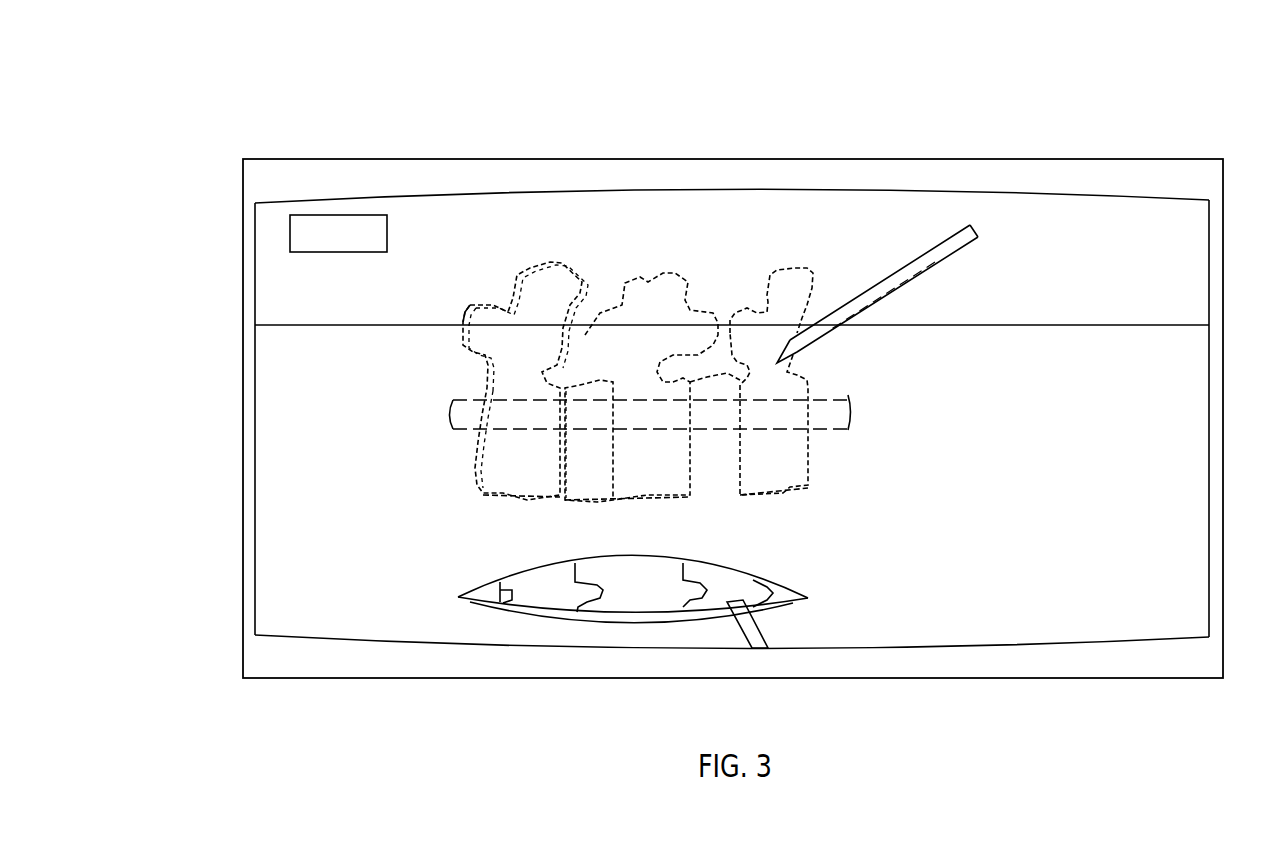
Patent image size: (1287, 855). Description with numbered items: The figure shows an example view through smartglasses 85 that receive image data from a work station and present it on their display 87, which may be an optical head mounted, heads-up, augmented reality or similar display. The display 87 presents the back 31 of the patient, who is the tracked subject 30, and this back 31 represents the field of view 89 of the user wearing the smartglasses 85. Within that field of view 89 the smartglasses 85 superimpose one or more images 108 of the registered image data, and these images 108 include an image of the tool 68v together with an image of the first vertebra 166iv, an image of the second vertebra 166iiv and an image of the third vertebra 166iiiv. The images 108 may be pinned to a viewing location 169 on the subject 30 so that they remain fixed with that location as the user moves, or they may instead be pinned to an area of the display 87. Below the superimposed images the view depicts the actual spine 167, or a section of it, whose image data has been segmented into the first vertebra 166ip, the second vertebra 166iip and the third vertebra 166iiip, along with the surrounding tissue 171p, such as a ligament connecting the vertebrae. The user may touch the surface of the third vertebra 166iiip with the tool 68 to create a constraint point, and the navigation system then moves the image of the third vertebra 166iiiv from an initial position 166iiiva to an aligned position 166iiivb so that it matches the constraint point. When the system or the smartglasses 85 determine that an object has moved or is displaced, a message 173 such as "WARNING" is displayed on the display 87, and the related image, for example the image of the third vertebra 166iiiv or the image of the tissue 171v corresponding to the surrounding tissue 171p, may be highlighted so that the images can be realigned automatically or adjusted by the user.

The smartglasses 85 is at (298, 110).
The display 87 is at (1112, 193).
The field of view 89 is at (277, 286).
The subject 30 is at (1188, 459).
The message 173 is at (337, 212).
The image of the third vertebra 166iiiv is at (520, 277).
The aligned position 166iiivb is at (490, 307).
The position 166iiiva is at (460, 343).
The image of the second vertebra 166iiv is at (653, 273).
The image of the first vertebra 166iv is at (787, 263).
The image of the tool 68v is at (930, 245).
The viewing location 169 is at (425, 422).
The image of the tissue 171v is at (827, 422).
The images 108 is at (890, 371).
The spine 167 is at (460, 550).
The tissue 171p is at (700, 620).
The back 31 is at (829, 558).
The third vertebra 166iiip is at (540, 580).
The second vertebra 166iip is at (647, 570).
The first vertebra 166ip is at (723, 577).
The tool 68 is at (758, 637).